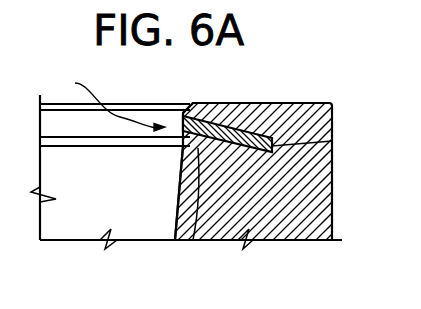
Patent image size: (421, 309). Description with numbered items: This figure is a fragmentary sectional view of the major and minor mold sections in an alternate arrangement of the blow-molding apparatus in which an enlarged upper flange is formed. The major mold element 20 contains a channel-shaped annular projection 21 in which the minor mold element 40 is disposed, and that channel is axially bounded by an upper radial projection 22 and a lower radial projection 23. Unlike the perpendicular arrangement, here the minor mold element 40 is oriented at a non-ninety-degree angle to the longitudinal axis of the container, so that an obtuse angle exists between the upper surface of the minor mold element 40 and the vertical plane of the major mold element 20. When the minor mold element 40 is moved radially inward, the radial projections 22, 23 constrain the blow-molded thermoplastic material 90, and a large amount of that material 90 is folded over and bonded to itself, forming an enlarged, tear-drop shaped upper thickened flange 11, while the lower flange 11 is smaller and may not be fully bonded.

The major mold element 20 is at (304, 103).
The thickened flange 11 is at (178, 103).
The channel-shaped annular projection 21 is at (105, 100).
The upper radial projection 22 is at (194, 103).
The minor mold element 40 is at (332, 141).
The blow-molded thermoplastic material 90 is at (167, 205).
The lower radial projection 23 is at (193, 240).